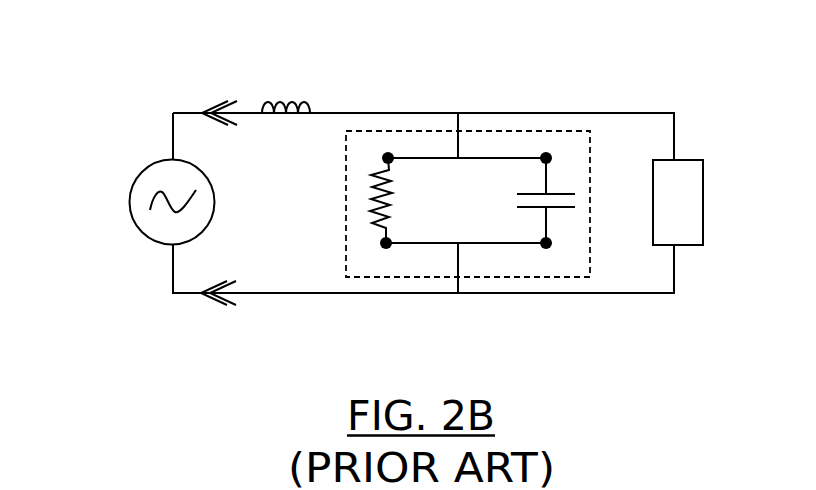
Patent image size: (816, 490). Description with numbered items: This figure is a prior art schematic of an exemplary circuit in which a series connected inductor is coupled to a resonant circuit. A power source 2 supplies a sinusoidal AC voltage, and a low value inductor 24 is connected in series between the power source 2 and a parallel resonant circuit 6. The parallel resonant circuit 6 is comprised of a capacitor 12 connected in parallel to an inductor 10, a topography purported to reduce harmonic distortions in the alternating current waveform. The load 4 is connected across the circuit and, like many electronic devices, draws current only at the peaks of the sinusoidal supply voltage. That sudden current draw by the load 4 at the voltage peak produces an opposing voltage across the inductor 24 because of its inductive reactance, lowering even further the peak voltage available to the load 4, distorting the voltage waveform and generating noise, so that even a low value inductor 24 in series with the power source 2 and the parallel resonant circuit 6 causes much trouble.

The power source 2 is at (130, 195).
The inductor 24 is at (277, 93).
The parallel resonant circuit 6 is at (573, 138).
The inductor 10 is at (383, 195).
The capacitor 12 is at (560, 198).
The load 4 is at (690, 180).